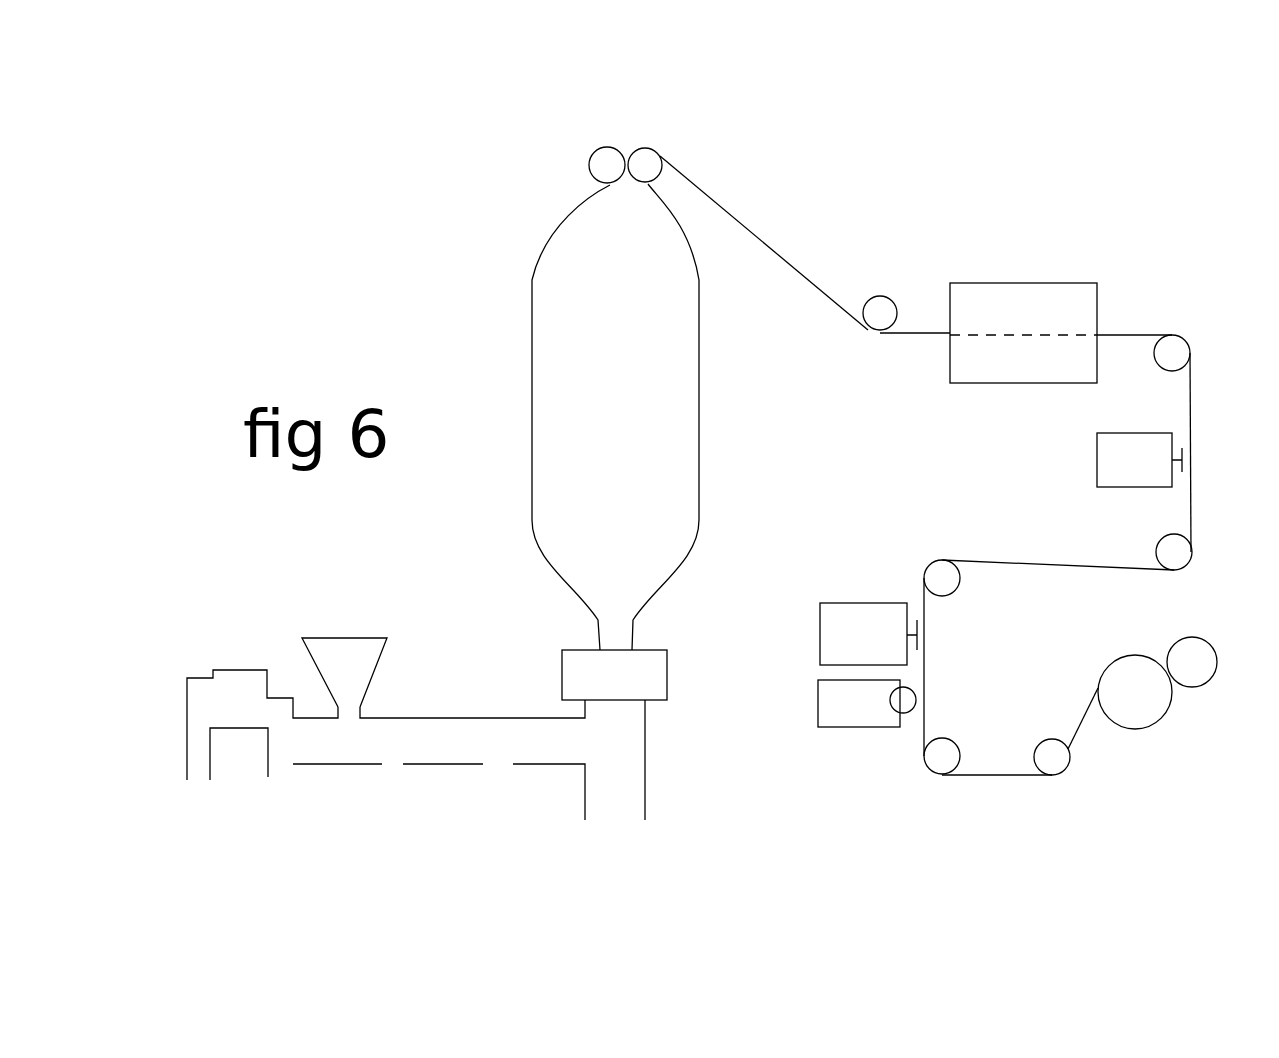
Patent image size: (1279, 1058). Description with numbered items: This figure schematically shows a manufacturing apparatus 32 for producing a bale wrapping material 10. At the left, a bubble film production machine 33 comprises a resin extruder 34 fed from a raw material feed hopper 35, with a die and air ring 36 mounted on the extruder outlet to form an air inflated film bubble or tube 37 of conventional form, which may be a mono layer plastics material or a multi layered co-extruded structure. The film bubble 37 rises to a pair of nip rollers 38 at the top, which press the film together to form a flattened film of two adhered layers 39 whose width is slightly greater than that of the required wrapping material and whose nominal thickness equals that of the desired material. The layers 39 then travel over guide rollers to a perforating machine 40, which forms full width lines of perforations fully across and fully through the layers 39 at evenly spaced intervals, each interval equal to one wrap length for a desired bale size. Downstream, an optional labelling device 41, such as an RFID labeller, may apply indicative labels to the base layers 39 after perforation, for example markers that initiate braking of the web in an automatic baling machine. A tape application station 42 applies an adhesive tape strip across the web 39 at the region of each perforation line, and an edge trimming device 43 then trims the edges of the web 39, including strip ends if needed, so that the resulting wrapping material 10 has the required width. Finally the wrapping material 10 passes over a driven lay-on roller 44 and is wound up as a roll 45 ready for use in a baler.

The wrapping material 10 is at (1010, 778).
The manufacturing apparatus 32 is at (480, 520).
The bubble film production machine 33 is at (498, 715).
The resin extruder 34 is at (447, 742).
The raw material feed hopper 35 is at (357, 655).
The die and air ring 36 is at (630, 677).
The film bubble 37 is at (532, 375).
The nip rollers 38 is at (605, 162).
The two adhered layers 39 is at (735, 215).
The perforating machine 40 is at (1003, 300).
The labelling device 41 is at (1110, 450).
The tape application station 42 is at (863, 617).
The edge trimming device 43 is at (865, 710).
The driven lay-on roller 44 is at (1135, 710).
The roll 45 is at (1187, 660).